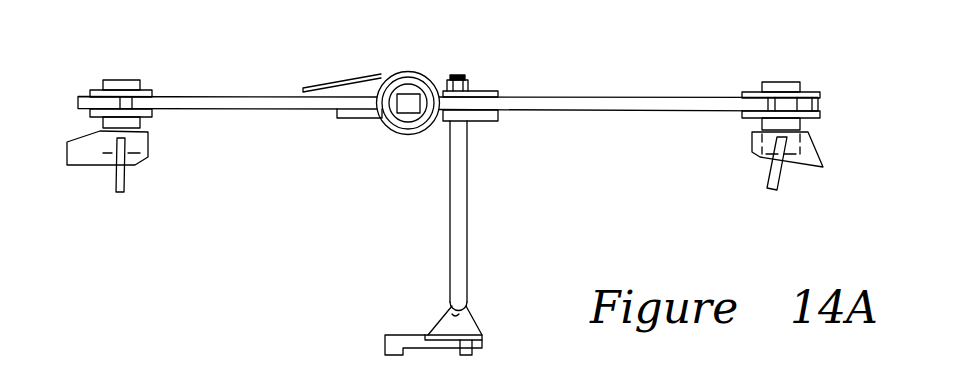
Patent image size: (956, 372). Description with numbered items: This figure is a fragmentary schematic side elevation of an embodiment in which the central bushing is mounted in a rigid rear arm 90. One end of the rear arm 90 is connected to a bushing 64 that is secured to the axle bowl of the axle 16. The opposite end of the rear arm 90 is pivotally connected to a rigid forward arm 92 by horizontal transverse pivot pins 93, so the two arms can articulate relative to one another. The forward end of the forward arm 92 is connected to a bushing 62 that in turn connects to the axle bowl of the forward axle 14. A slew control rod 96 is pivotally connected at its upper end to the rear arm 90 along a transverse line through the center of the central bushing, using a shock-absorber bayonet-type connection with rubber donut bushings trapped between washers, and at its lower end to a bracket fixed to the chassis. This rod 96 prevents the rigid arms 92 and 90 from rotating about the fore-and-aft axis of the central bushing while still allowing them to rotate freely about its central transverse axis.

The forward axle 14 is at (128, 168).
The axle 16 is at (808, 160).
The bushing 62 is at (115, 86).
The bushing 64 is at (781, 83).
The rear arm 90 is at (687, 97).
The forward arm 92 is at (197, 105).
The pivot pins 93 is at (407, 135).
The slew control rod 96 is at (460, 190).